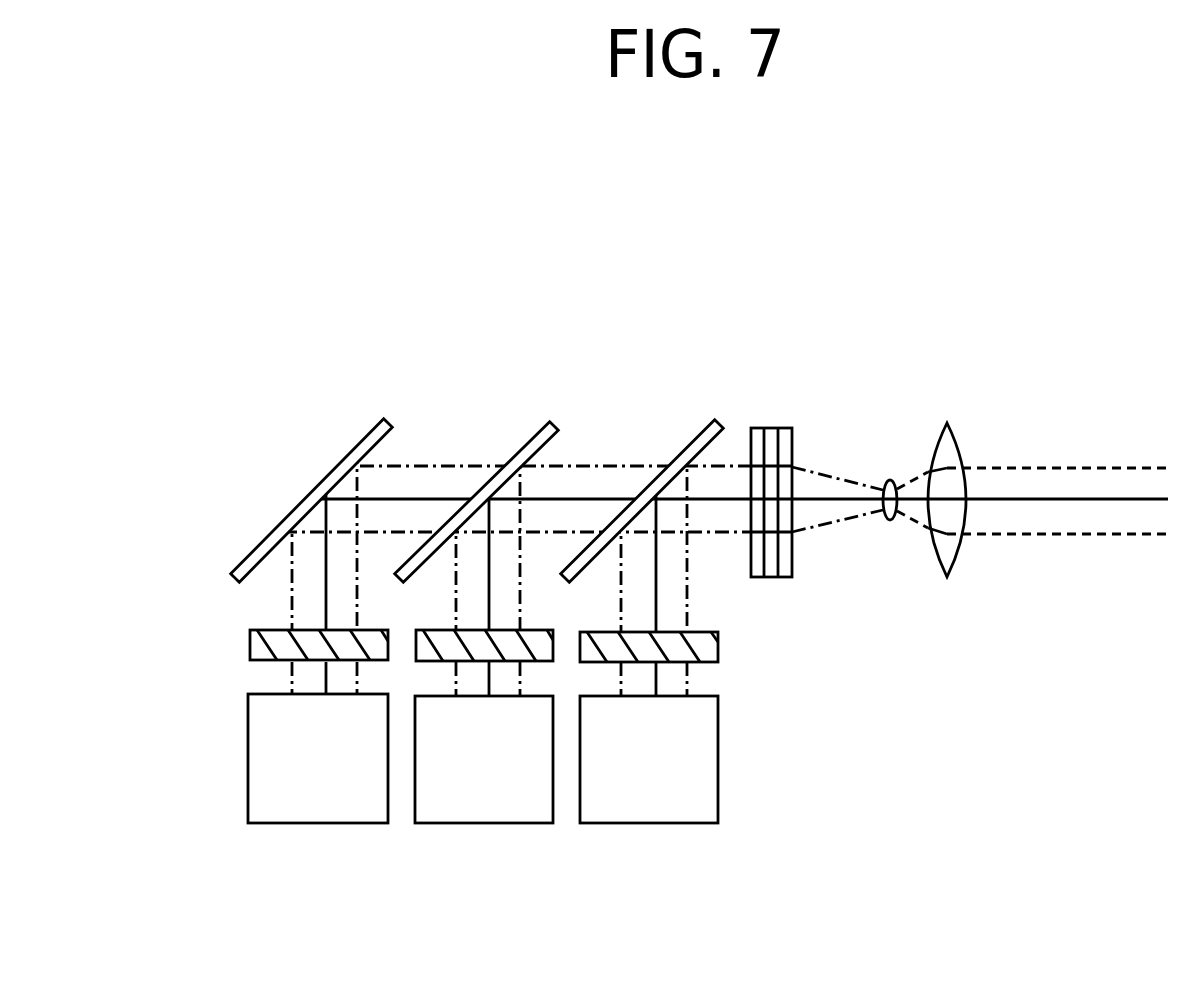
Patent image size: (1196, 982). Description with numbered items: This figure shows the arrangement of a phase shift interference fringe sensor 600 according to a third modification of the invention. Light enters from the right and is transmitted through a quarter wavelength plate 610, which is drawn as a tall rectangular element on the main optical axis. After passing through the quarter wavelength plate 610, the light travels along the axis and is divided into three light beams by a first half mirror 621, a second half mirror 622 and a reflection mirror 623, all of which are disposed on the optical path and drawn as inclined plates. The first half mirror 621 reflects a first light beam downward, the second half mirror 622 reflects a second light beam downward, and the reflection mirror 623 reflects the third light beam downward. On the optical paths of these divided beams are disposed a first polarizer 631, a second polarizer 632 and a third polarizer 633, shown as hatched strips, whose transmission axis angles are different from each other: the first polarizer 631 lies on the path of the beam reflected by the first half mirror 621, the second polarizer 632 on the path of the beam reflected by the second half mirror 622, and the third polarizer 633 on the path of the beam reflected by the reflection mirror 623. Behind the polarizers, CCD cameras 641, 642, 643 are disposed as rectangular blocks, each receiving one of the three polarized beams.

The phase shift interference fringe sensor 600 is at (869, 330).
The quarter wavelength plate 610 is at (785, 429).
The first half mirror 621 is at (690, 438).
The second half mirror 622 is at (530, 440).
The reflection mirror 623 is at (363, 438).
The first polarizer 631 is at (718, 648).
The second polarizer 632 is at (528, 632).
The third polarizer 633 is at (250, 645).
The CCD camera 641 is at (648, 815).
The CCD camera 642 is at (485, 815).
The CCD camera 643 is at (315, 815).